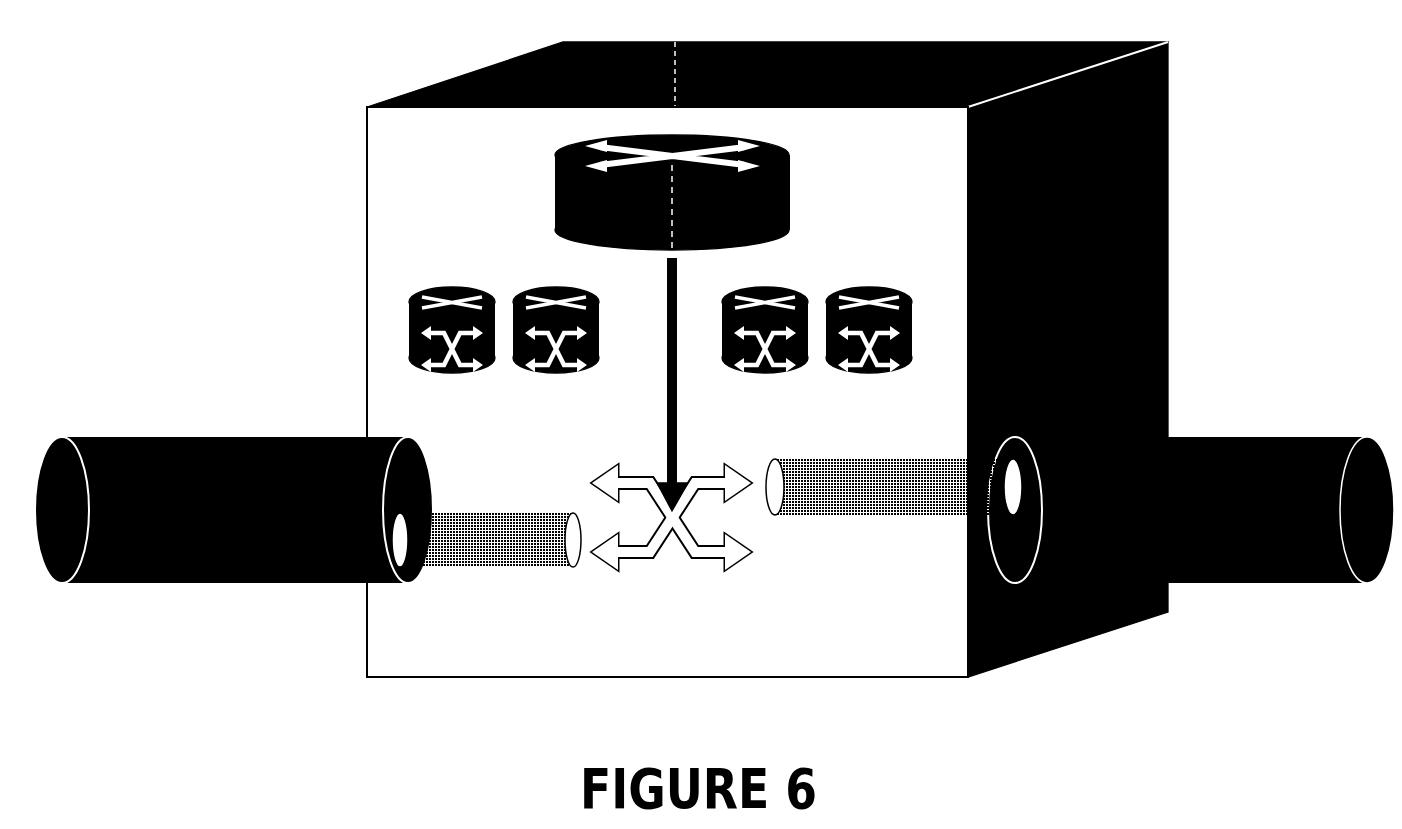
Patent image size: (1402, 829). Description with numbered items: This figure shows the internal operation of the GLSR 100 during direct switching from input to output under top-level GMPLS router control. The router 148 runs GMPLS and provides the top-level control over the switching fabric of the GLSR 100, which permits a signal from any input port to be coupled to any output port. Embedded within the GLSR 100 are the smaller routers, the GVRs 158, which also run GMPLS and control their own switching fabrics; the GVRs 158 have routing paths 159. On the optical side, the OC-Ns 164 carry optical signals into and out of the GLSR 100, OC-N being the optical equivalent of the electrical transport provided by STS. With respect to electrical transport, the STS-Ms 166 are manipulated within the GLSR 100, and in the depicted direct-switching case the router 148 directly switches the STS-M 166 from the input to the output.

The GLSR 100 is at (340, 116).
The router 148 is at (790, 200).
The GVRs 158 is at (430, 288).
The routing paths 159 is at (483, 374).
The OC-Ns 164 is at (216, 584).
The STS-Ms 166 is at (492, 568).